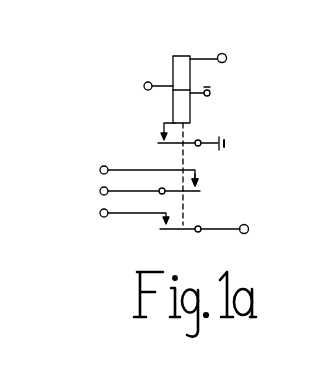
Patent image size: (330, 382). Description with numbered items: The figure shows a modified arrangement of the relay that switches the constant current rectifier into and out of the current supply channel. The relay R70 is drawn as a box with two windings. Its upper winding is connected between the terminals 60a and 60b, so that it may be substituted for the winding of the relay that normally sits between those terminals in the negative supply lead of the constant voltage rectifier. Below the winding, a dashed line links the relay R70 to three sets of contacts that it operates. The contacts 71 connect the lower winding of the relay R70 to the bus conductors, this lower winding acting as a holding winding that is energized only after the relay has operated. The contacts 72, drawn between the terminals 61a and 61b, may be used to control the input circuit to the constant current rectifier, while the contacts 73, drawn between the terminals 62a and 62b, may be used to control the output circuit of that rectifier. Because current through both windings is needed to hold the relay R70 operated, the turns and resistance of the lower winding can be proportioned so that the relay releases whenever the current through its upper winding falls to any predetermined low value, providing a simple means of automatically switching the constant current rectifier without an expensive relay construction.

The terminal 60a is at (143, 85).
The terminal 60b is at (225, 54).
The relay R70 is at (190, 110).
The contacts 71 is at (157, 142).
The input terminal 61a is at (100, 169).
The input terminal 61b is at (100, 190).
The input terminal 62a is at (100, 212).
The output terminal 62b is at (246, 225).
The contacts 72 is at (201, 183).
The contacts 73 is at (156, 228).